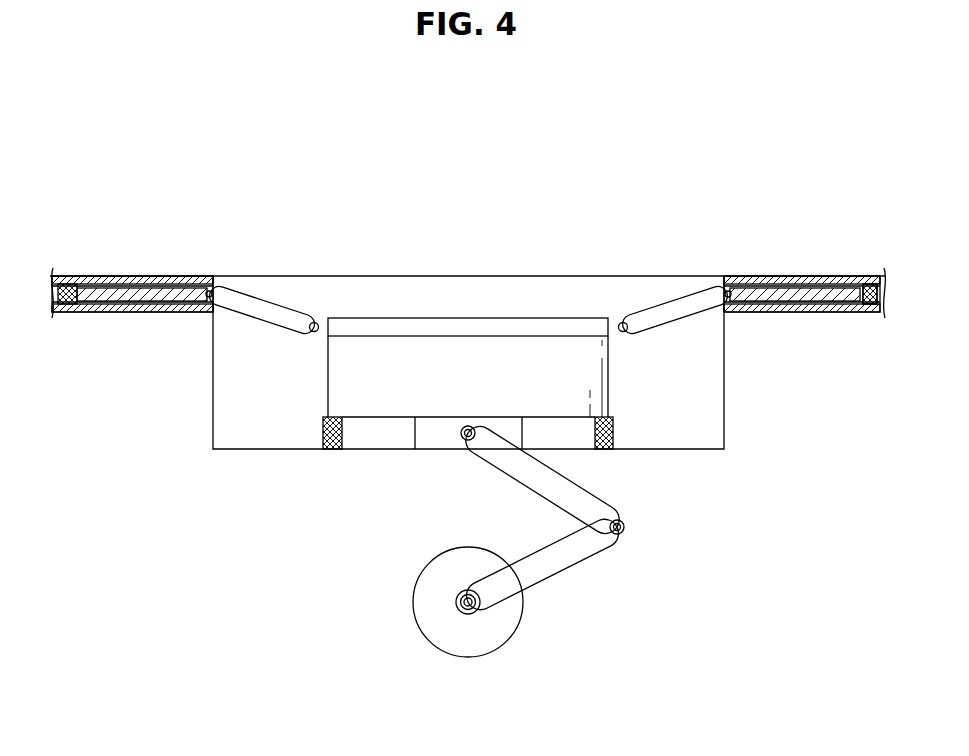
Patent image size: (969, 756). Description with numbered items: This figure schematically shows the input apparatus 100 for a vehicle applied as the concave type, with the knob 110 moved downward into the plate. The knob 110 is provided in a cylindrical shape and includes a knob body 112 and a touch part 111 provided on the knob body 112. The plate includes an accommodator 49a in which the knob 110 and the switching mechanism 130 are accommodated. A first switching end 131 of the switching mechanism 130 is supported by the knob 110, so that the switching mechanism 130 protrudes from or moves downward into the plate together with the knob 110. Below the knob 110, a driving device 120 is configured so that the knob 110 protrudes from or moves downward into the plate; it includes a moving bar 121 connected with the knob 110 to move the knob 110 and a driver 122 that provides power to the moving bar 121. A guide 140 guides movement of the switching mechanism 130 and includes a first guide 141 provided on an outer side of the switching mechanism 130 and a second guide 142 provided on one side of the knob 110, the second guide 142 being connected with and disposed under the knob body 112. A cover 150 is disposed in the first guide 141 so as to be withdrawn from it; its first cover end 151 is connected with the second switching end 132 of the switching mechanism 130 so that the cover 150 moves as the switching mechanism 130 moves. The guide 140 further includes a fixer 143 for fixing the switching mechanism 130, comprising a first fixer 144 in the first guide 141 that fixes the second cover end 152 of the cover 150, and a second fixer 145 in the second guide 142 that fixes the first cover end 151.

The input apparatus 100 is at (310, 113).
The knob 110 is at (507, 213).
The touch part 111 is at (413, 328).
The knob body 112 is at (498, 365).
The driving device 120 is at (647, 580).
The moving bar 121 is at (573, 555).
The driver 122 is at (502, 628).
The switching mechanism 130 is at (265, 308).
The first switching end 131 is at (320, 318).
The second switching end 132 is at (214, 278).
The guide 140 is at (197, 497).
The first guide 141 is at (128, 310).
The second guide 142 is at (363, 423).
The fixer 143 is at (851, 380).
The first fixer 144 is at (70, 276).
The second fixer 145 is at (335, 449).
The cover 150 is at (150, 276).
The first cover end 151 is at (721, 276).
The second cover end 152 is at (852, 276).
The accommodator 49a is at (216, 383).